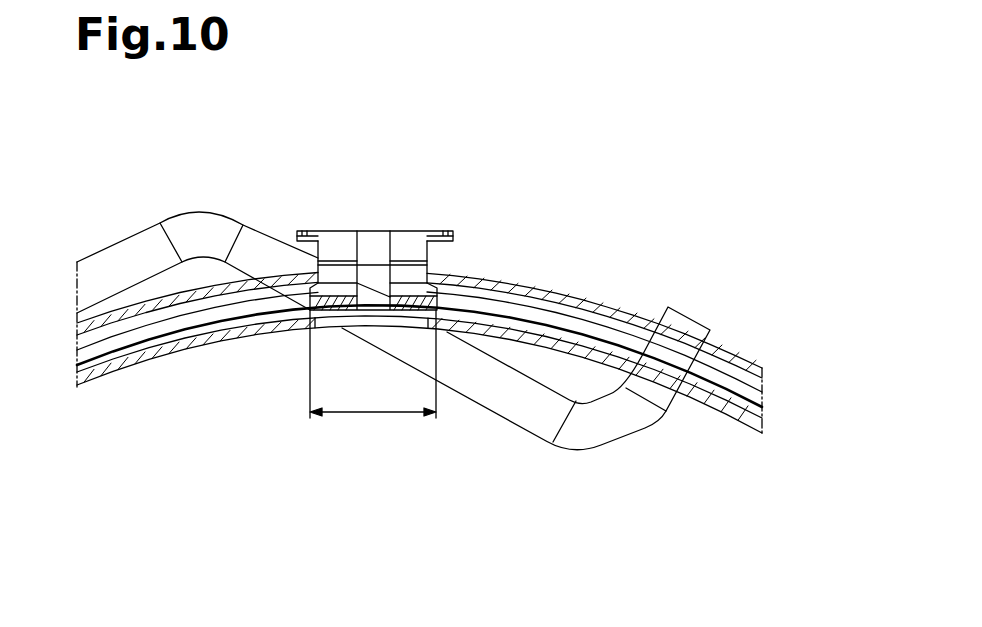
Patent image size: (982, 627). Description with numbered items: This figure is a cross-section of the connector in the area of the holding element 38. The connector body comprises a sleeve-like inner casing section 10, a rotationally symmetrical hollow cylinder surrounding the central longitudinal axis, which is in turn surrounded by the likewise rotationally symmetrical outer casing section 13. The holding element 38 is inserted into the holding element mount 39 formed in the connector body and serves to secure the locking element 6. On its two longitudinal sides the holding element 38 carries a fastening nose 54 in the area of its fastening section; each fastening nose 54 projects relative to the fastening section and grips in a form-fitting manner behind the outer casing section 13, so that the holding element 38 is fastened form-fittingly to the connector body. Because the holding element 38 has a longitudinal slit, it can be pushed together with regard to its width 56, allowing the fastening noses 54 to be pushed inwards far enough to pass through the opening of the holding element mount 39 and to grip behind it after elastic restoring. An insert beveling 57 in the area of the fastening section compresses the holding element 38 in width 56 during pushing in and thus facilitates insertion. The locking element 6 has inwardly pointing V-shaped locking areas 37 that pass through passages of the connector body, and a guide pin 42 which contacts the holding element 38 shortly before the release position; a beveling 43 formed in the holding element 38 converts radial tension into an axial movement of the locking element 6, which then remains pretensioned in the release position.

The locking element 6 is at (213, 226).
The inner casing section 10 is at (544, 338).
The outer casing section 13 is at (614, 305).
The locking area 37 is at (597, 463).
The holding element 38 is at (482, 166).
The holding element mount 39 is at (367, 263).
The guide pin 42 is at (683, 322).
The beveling 43 is at (462, 232).
The fastening nose 54 is at (455, 275).
The width 56 is at (370, 412).
The insert beveling 57 is at (308, 311).